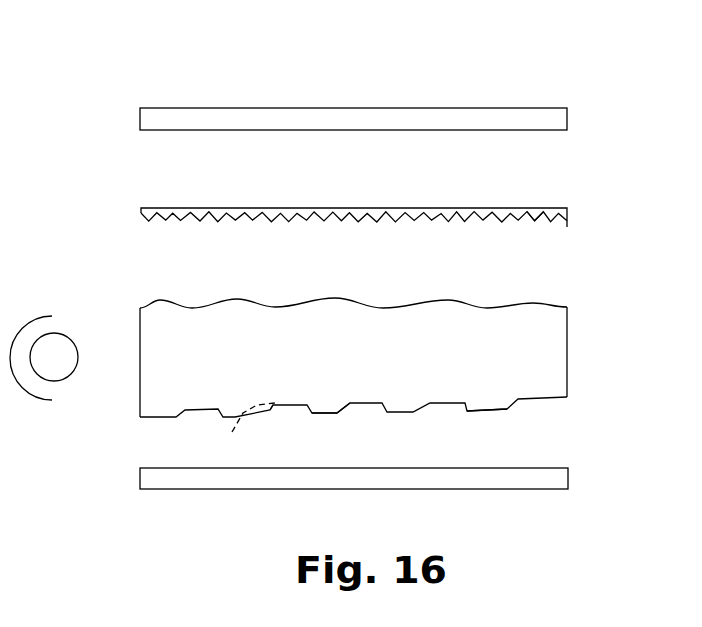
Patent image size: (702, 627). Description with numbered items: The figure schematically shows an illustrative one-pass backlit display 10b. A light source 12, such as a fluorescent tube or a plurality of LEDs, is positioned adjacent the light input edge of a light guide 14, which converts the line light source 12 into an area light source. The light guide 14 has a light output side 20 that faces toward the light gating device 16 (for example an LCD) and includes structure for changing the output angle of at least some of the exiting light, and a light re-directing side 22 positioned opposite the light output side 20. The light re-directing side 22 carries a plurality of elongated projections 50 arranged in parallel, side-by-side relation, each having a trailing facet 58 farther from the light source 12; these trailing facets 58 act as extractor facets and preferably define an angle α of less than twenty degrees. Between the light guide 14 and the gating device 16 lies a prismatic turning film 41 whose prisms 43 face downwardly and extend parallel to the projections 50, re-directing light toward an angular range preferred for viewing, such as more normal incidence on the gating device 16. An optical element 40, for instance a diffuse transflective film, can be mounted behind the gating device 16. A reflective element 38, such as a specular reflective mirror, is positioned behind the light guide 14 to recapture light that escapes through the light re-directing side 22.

The one-pass backlit display 10b is at (125, 73).
The light gating device 16 is at (496, 107).
The optical element 40 is at (381, 224).
The prismatic turning film 41 is at (566, 222).
The prisms 43 is at (530, 223).
The light output side 20 is at (410, 300).
The light guide 14 is at (394, 360).
The light re-directing side 22 is at (404, 420).
The elongated projections 50 is at (323, 415).
The trailing facet 58 is at (267, 413).
The light source 12 is at (62, 380).
The reflective element 38 is at (522, 467).